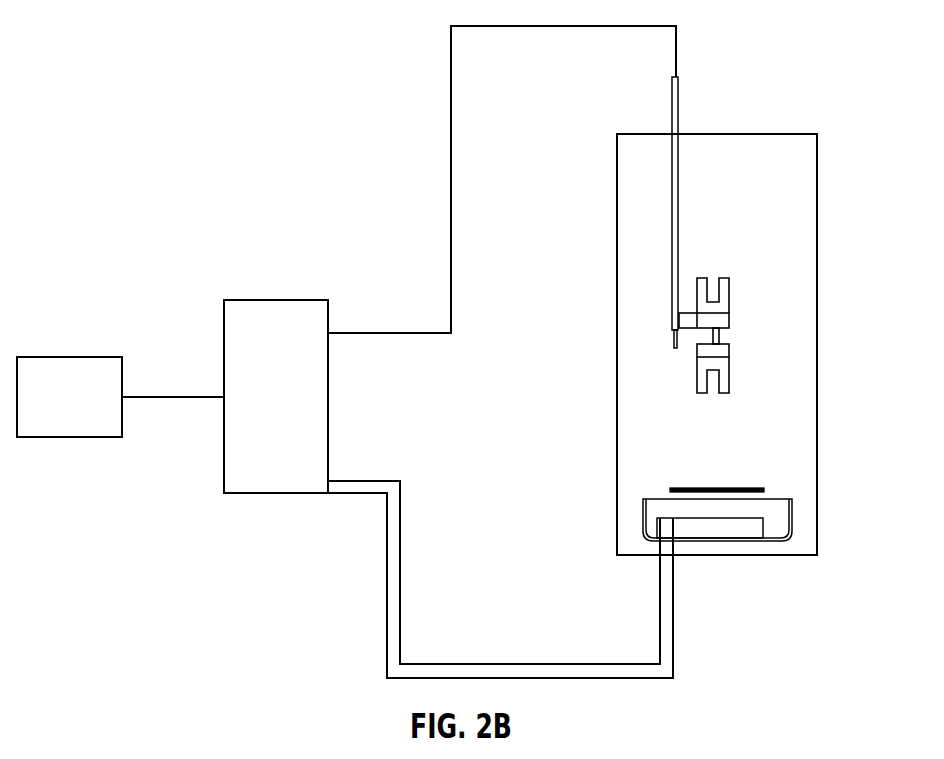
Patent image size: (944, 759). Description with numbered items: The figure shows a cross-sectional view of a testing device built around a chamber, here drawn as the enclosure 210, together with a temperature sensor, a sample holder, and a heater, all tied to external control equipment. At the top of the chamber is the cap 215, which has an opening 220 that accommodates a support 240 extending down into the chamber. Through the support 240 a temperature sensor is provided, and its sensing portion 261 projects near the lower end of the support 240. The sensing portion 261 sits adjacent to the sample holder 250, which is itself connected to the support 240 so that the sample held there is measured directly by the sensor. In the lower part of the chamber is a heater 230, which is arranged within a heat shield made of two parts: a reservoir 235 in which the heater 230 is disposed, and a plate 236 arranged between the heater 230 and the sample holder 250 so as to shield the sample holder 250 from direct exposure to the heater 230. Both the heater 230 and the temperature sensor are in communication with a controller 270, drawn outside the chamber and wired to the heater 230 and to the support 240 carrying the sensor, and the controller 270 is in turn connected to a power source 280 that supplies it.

The chamber 210 is at (818, 188).
The cap 215 is at (785, 133).
The opening 220 is at (672, 133).
The support 240 is at (680, 99).
The sensing portion 261 is at (673, 340).
The sample holder 250 is at (730, 373).
The plate 236 is at (718, 487).
The reservoir 235 is at (793, 520).
The heater 230 is at (717, 532).
The controller 270 is at (299, 412).
The power source 280 is at (92, 412).